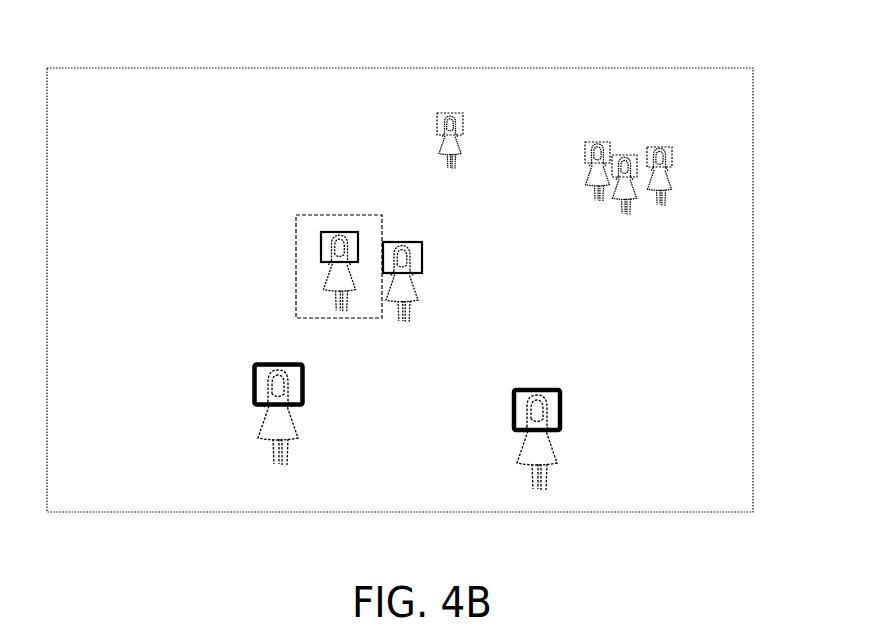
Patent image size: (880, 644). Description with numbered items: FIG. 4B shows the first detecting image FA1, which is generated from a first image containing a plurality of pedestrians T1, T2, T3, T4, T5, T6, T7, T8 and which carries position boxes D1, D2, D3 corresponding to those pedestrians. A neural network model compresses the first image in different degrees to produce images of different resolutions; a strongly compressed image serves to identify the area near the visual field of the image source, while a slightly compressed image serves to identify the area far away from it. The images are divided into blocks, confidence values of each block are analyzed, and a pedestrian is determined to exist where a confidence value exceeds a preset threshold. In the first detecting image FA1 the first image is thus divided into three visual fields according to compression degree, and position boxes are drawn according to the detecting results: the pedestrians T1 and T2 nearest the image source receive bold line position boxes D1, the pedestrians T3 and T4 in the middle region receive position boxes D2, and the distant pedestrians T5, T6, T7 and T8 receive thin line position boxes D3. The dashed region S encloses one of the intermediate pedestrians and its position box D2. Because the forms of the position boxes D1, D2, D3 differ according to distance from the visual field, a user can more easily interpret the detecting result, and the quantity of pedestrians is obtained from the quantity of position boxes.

The first detecting image FA1 is at (714, 68).
The selection region S is at (316, 215).
The position box D1 is at (253, 388).
The position box D2 is at (350, 231).
The position box D3 is at (444, 112).
The pedestrian T1 is at (280, 420).
The pedestrian T2 is at (535, 448).
The pedestrian T3 is at (344, 275).
The pedestrian T4 is at (404, 285).
The pedestrian T5 is at (453, 145).
The pedestrian T6 is at (633, 185).
The pedestrian T7 is at (600, 172).
The pedestrian T8 is at (660, 180).